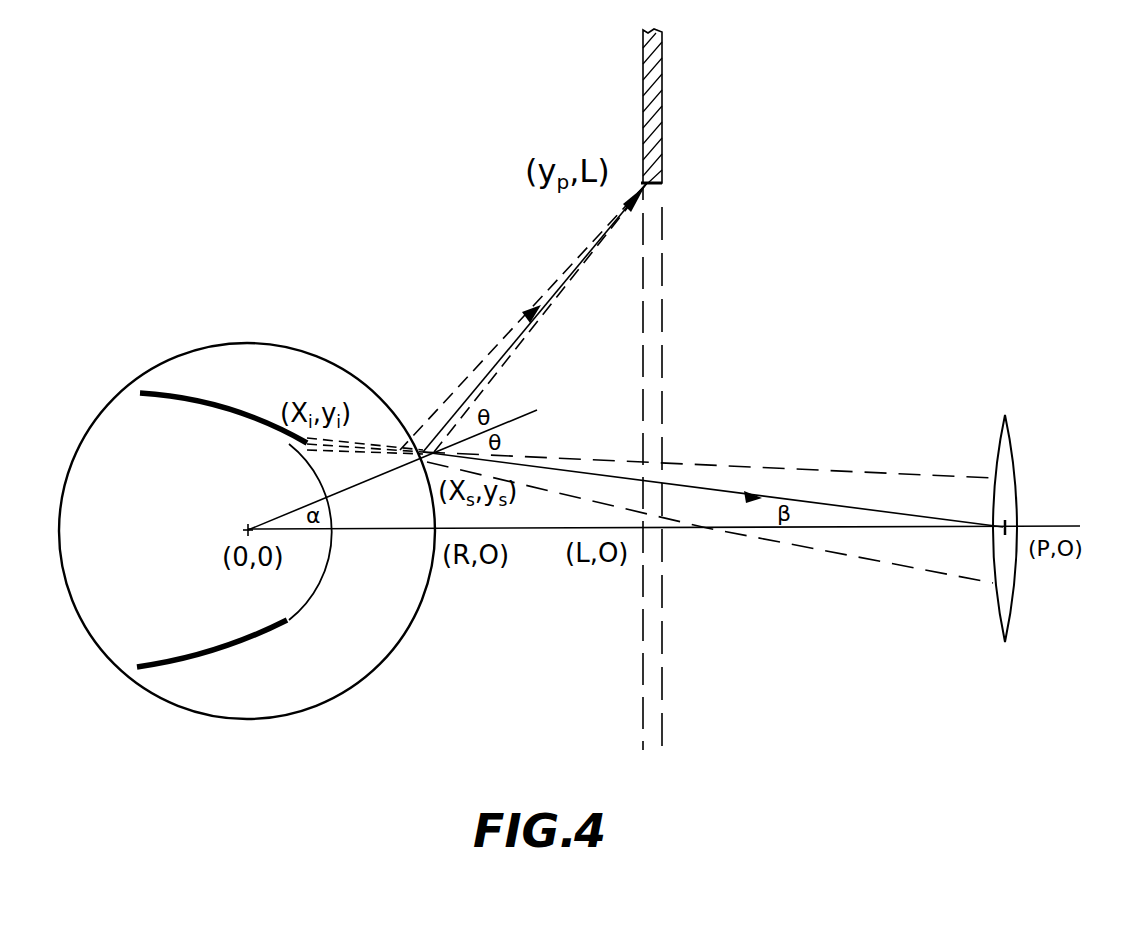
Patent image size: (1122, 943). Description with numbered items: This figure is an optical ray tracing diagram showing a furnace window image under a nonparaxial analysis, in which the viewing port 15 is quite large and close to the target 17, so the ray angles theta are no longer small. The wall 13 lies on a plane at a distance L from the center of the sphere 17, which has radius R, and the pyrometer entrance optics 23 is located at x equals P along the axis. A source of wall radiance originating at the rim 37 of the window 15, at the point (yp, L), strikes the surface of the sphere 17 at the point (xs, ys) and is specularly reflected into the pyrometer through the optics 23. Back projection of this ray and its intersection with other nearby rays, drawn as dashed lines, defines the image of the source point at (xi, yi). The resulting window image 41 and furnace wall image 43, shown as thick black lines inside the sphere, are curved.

The wall 13 is at (662, 92).
The viewing port 15 is at (662, 295).
The target 17 is at (280, 345).
The pyrometer entrance optics 23 is at (1005, 415).
The rim 37 is at (648, 185).
The window image 41 is at (296, 488).
The furnace wall image 43 is at (203, 412).